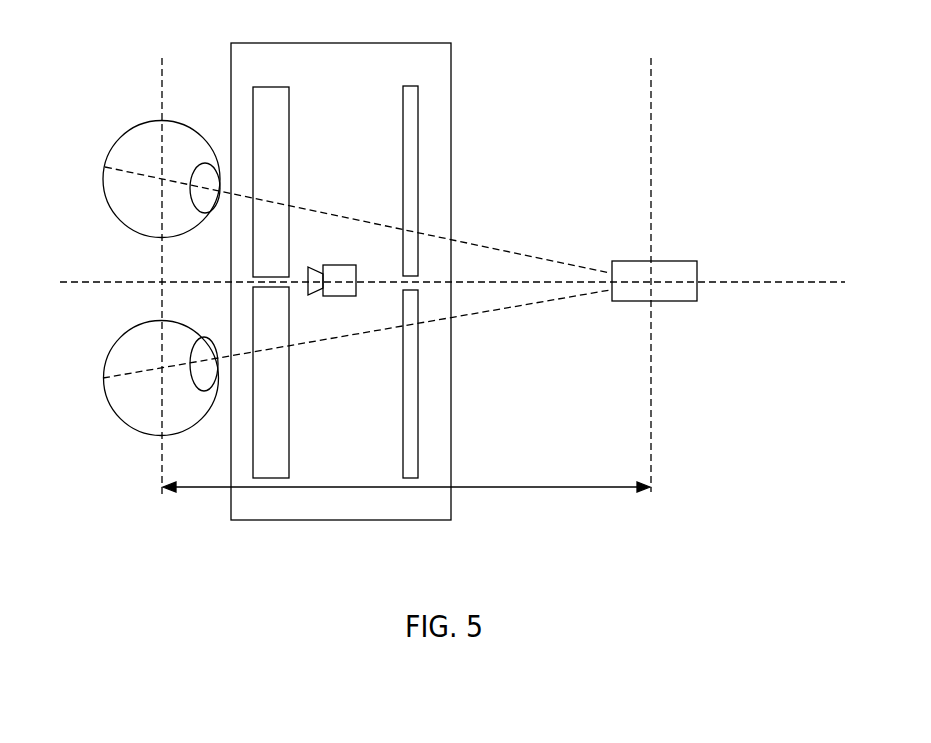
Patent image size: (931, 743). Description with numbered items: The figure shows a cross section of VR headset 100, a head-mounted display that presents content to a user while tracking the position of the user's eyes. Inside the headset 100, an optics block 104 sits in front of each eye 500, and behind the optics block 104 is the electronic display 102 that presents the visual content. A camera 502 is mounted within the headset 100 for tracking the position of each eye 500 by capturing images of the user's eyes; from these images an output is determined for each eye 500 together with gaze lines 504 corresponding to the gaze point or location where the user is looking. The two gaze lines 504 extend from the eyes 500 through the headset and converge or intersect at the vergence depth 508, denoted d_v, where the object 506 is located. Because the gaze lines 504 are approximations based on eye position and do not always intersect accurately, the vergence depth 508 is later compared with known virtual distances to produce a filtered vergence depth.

The VR headset 100 is at (427, 43).
The electronic display 102 is at (413, 131).
The optics block 104 is at (267, 95).
The eye 500 is at (103, 182).
The camera 502 is at (332, 277).
The gaze lines 504 is at (567, 299).
The object 506 is at (688, 268).
The vergence depth 508 is at (630, 485).